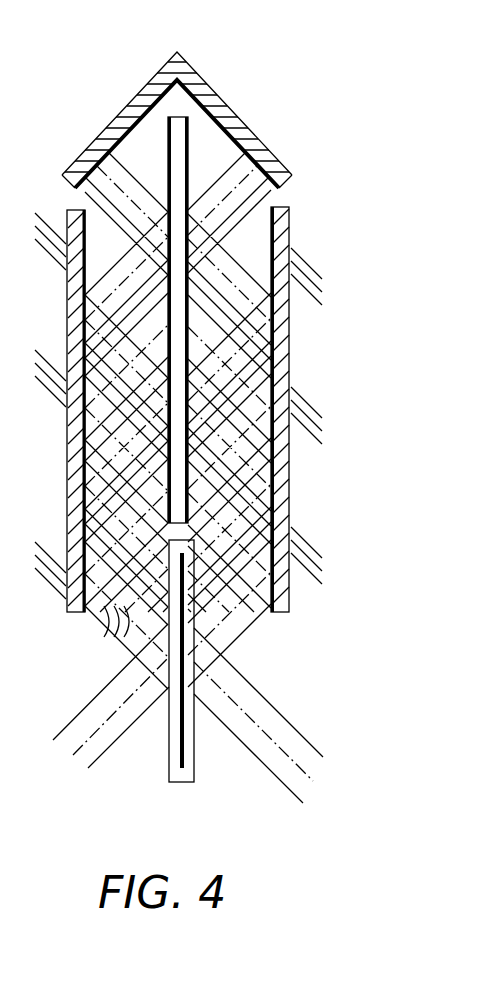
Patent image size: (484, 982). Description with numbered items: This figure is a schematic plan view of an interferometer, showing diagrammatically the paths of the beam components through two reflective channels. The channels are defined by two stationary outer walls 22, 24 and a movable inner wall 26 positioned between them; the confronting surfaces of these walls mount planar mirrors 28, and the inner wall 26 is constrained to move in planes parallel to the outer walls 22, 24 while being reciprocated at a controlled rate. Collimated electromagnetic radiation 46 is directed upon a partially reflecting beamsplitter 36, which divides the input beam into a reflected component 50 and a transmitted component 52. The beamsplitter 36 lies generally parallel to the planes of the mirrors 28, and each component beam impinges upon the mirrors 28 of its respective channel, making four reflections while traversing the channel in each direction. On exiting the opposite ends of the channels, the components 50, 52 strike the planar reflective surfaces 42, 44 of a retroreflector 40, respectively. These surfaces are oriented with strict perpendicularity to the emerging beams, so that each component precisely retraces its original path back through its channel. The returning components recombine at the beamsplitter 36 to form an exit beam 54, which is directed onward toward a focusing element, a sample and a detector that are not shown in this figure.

The stationary outer wall 22 is at (68, 516).
The stationary outer wall 24 is at (285, 485).
The movable inner wall 26 is at (172, 280).
The planar mirrors 28 is at (185, 165).
The beamsplitter 36 is at (190, 785).
The retroreflector 40 is at (229, 104).
The planar reflective surface 42 is at (223, 133).
The planar reflective surface 44 is at (152, 100).
The collimated electromagnetic radiation 46 is at (357, 762).
The reflected component 50 is at (228, 632).
The transmitted component 52 is at (137, 614).
The exit beam 54 is at (35, 726).